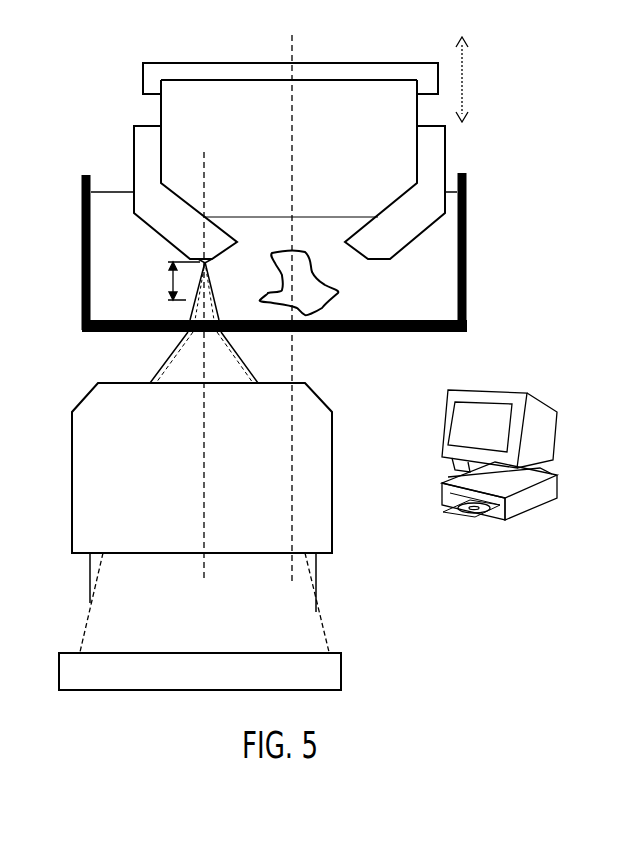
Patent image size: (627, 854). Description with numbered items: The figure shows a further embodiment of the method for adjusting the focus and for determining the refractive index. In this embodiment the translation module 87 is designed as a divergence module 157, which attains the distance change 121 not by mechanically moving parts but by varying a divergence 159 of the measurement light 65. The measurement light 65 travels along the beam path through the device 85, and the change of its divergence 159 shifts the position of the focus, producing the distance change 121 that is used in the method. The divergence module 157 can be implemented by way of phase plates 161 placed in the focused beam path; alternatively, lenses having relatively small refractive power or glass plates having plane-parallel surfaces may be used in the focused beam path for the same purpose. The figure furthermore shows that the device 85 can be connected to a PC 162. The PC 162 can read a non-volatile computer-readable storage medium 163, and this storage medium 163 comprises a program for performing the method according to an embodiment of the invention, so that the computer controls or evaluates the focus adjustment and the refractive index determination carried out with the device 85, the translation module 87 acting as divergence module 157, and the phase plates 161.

The distance change 121 is at (168, 283).
The device 85 is at (370, 422).
The divergence 159 is at (317, 565).
The measurement light 65 is at (325, 637).
The translation module 87 is at (270, 672).
The divergence module 157 is at (270, 672).
The phase plates 161 is at (330, 676).
The PC 162 is at (503, 483).
The non-volatile computer-readable storage medium 163 is at (480, 517).